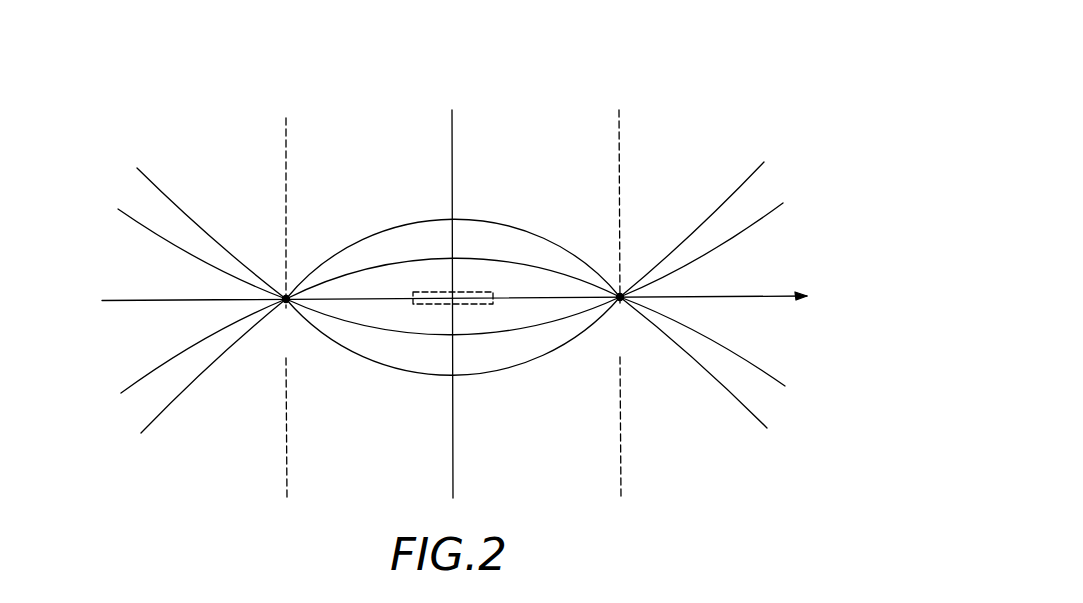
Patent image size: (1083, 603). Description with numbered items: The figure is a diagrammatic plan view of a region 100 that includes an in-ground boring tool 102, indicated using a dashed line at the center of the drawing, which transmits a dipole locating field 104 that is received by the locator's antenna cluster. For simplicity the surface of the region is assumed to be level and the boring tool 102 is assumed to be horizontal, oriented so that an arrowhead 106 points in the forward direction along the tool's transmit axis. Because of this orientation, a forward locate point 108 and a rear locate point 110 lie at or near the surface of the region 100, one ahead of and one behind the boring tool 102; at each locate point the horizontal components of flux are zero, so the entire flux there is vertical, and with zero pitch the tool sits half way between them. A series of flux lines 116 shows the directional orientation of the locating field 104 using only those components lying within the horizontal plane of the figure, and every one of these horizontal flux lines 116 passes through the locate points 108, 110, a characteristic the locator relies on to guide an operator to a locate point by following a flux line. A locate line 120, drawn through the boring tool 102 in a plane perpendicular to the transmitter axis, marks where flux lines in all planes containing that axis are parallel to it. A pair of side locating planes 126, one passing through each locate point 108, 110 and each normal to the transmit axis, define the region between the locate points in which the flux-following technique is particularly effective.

The region 100 is at (683, 96).
The boring tool 102 is at (477, 304).
The dipole locating field 104 is at (172, 403).
The arrowhead 106 is at (786, 292).
The forward locate point 108 is at (618, 294).
The rear locate point 110 is at (289, 296).
The flux lines 116 is at (205, 371).
The locate line 120 is at (454, 469).
The side locating planes 126 is at (288, 435).